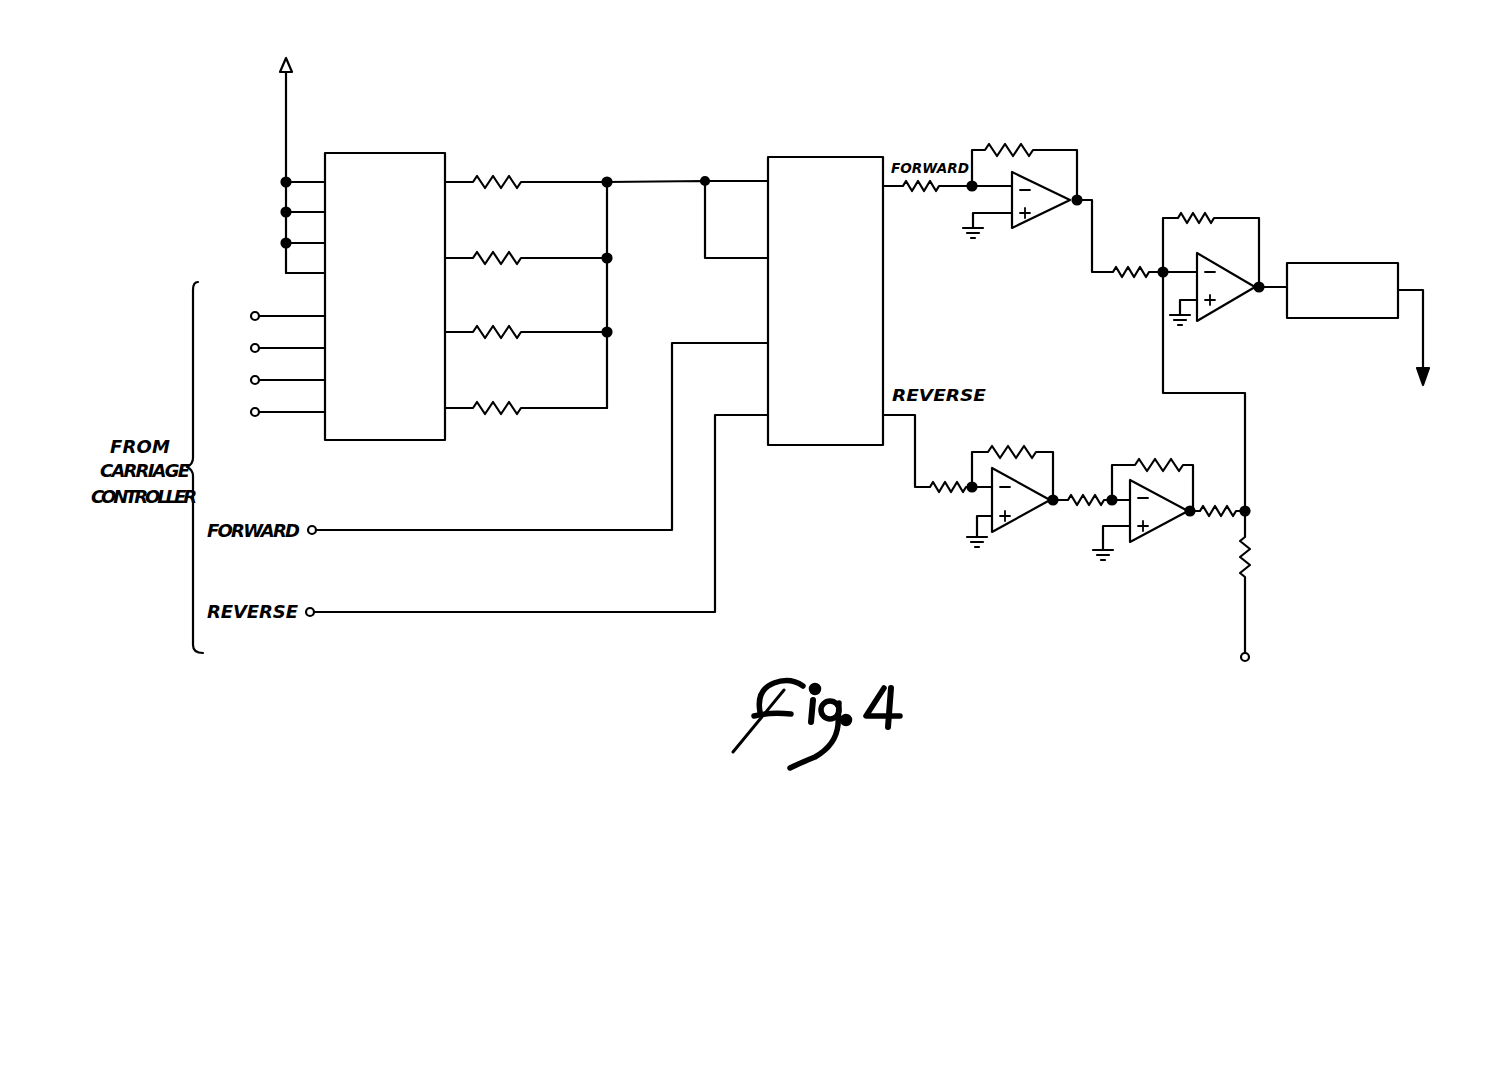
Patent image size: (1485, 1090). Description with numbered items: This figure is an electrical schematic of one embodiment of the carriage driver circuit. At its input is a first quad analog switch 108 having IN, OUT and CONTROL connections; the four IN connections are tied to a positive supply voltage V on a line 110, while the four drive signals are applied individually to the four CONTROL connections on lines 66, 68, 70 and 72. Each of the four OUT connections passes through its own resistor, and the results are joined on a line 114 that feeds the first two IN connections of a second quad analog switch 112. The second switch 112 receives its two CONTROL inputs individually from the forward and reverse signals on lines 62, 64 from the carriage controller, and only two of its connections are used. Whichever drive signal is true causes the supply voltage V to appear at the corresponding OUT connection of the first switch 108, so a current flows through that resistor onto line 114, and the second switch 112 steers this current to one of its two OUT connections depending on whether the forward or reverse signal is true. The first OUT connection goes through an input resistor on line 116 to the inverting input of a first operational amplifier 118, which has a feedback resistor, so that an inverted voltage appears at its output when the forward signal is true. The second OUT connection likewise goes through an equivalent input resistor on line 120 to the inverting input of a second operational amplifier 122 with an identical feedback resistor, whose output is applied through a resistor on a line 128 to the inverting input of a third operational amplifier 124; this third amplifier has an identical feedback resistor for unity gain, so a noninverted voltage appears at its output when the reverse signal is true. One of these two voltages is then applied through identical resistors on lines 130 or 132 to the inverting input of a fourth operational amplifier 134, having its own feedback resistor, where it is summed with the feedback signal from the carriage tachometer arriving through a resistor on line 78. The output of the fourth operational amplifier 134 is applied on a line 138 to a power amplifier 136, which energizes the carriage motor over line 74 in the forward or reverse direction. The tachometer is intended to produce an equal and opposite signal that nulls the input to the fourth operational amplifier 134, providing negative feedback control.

The line 110 is at (286, 110).
The first quad analog switch 108 is at (370, 153).
The line 66 is at (300, 298).
The line 68 is at (300, 330).
The line 70 is at (300, 362).
The line 72 is at (300, 394).
The line 62 is at (352, 530).
The line 64 is at (350, 612).
The line 114 is at (614, 182).
The second quad analog switch 112 is at (810, 155).
The line 116 is at (900, 190).
The first operational amplifier 118 is at (1047, 224).
The line 130 is at (1096, 212).
The fourth operational amplifier 134 is at (1208, 319).
The line 138 is at (1270, 296).
The power amplifier 136 is at (1346, 263).
The line 74 is at (1423, 331).
The line 120 is at (915, 445).
The line 128 is at (1058, 490).
The line 132 is at (1200, 496).
The second operational amplifier 122 is at (1024, 531).
The third operational amplifier 124 is at (1175, 539).
The line 78 is at (1245, 614).